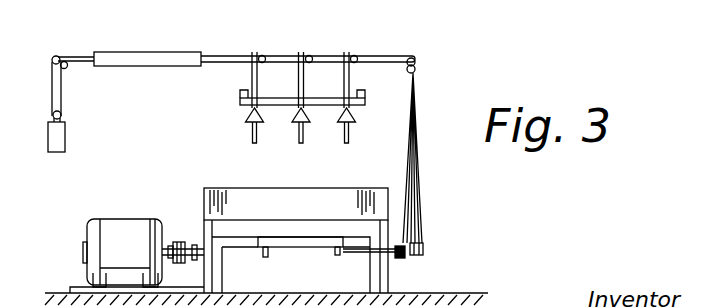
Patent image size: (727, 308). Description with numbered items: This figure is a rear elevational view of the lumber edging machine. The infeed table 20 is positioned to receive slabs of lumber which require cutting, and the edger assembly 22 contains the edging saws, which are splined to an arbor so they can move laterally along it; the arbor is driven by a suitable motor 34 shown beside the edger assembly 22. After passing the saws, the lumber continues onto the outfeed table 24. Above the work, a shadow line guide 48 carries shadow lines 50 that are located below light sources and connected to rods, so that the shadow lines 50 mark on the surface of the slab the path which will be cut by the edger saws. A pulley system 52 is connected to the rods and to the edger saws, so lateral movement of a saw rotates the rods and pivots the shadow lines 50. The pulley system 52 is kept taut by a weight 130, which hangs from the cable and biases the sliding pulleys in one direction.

The infeed table 20 is at (243, 228).
The edger assembly 22 is at (237, 205).
The outfeed table 24 is at (165, 60).
The motor 34 is at (125, 230).
The shadow line guide 48 is at (281, 101).
The shadow lines 50 is at (254, 143).
The pulley system 52 is at (324, 59).
The weight 130 is at (83, 167).